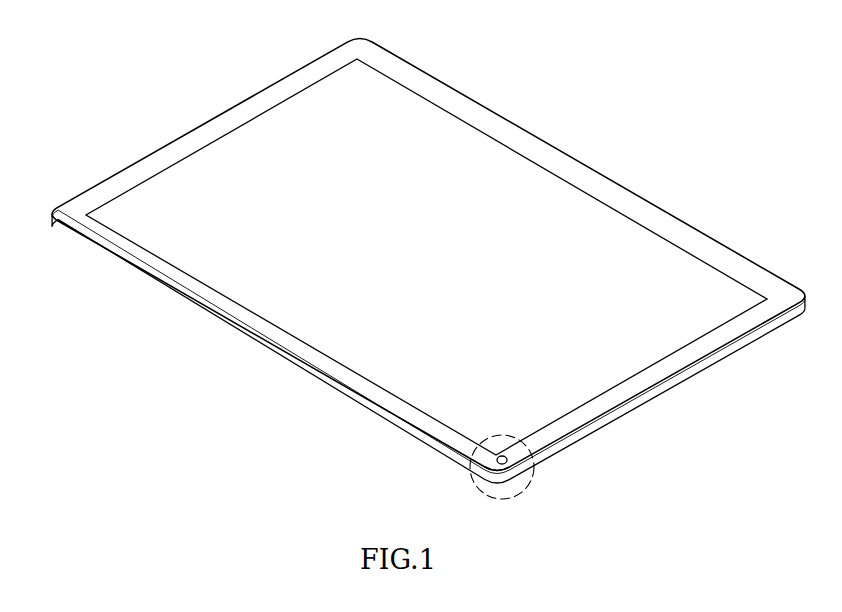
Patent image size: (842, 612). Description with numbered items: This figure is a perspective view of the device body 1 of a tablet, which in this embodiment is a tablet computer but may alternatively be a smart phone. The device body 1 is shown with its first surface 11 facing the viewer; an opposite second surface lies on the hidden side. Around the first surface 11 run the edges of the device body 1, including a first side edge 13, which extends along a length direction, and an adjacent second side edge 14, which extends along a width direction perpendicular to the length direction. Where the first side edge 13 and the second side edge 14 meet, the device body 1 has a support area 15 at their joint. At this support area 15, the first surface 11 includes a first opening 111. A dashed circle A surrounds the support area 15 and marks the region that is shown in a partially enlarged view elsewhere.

The device body 1 is at (183, 103).
The first surface 11 is at (556, 160).
The first side edge 13 is at (233, 351).
The second side edge 14 is at (670, 403).
The support area 15 is at (472, 483).
The first opening 111 is at (508, 459).
The circle A is at (532, 481).